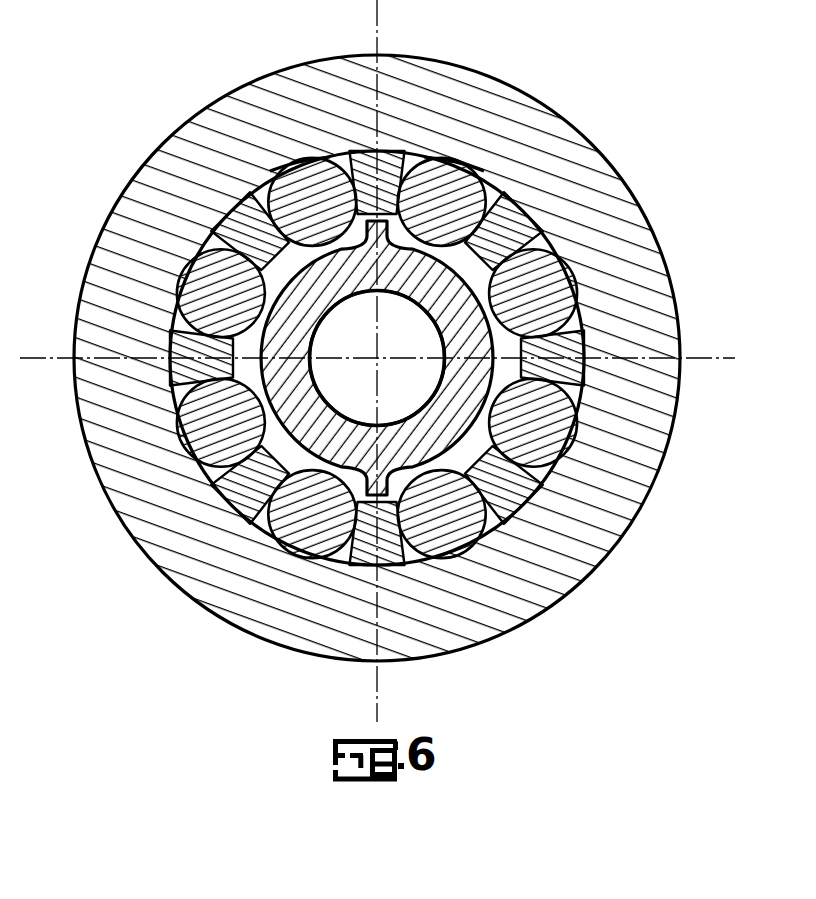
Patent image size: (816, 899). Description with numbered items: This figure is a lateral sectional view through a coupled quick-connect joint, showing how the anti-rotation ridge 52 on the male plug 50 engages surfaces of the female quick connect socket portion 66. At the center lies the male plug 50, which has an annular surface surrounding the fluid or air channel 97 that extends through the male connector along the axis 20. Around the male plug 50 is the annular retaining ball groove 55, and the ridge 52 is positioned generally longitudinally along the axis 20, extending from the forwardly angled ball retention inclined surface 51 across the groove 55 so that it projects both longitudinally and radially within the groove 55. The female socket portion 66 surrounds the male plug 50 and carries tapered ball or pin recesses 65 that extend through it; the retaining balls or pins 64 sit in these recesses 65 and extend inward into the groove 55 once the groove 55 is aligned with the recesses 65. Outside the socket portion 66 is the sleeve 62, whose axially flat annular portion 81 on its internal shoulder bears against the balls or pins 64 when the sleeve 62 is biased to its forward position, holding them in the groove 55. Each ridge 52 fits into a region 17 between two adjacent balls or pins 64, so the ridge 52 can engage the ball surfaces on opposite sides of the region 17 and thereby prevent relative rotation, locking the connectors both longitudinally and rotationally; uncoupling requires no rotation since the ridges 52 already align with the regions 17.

The region 17 is at (233, 200).
The axis 20 is at (376, 357).
The male plug 50 is at (445, 437).
The forwardly angled ball retention inclined surface 51 is at (572, 347).
The anti-rotation ridge 52 is at (302, 190).
The retaining ball groove 55 is at (237, 498).
The sleeve 62 is at (631, 535).
The retaining balls or pins 64 is at (300, 165).
The tapered ball or pin recesses 65 is at (350, 152).
The female quick connect socket portion 66 is at (172, 388).
The axially flat annular portion 81 is at (260, 517).
The fluid or air channel 97 is at (388, 392).